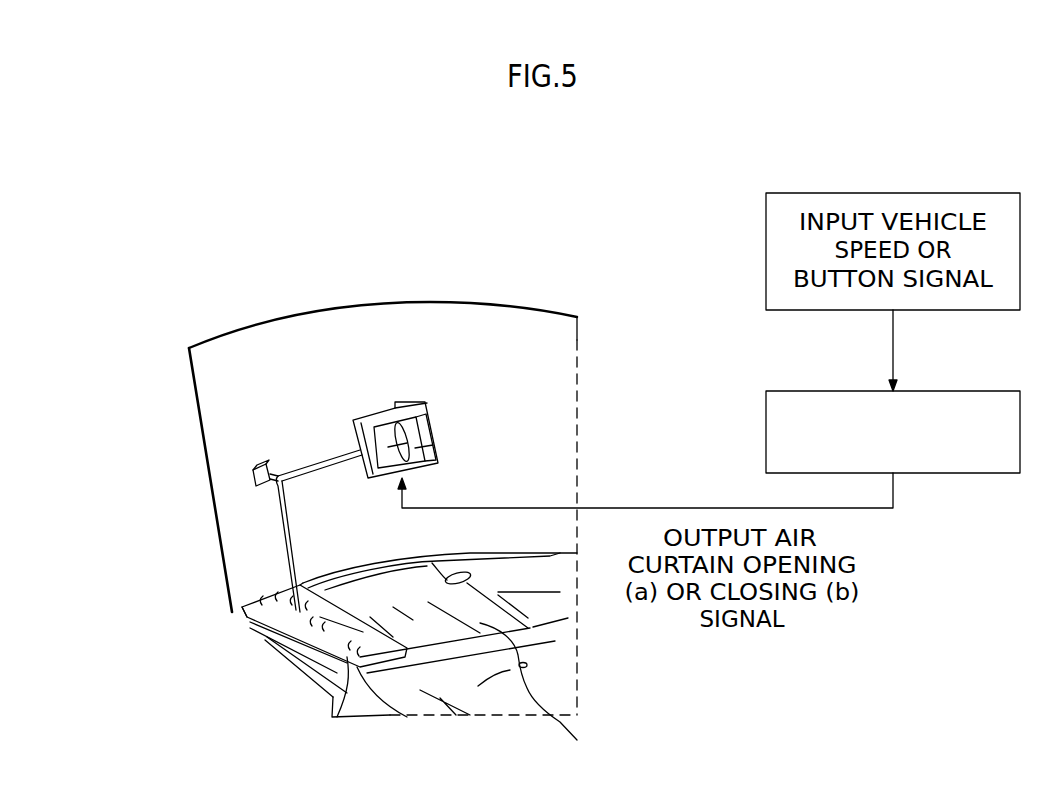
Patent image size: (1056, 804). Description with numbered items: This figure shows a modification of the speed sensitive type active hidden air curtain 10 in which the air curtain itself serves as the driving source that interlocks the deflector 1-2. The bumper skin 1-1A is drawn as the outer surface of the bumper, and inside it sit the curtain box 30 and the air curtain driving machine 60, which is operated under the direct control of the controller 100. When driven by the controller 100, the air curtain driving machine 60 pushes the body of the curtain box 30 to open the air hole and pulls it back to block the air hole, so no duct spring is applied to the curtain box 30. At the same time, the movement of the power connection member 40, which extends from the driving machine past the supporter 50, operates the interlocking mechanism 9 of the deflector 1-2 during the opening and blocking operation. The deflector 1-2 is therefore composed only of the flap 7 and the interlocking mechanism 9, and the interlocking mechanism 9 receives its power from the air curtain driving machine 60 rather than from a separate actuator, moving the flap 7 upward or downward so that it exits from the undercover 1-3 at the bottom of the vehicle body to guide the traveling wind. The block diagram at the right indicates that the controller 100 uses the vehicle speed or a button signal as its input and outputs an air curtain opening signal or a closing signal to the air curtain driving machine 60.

The speed sensitive type active hidden air curtain 10 is at (167, 366).
The bumper skin 1-1A is at (530, 350).
The curtain box 30 is at (384, 412).
The air curtain driving machine 60 is at (388, 447).
The supporter 50 is at (254, 470).
The power connection member 40 is at (284, 521).
The flap 7 is at (242, 612).
The interlocking mechanism 9 is at (305, 643).
The deflector 1-2 is at (200, 748).
The undercover 1-3 is at (459, 658).
The controller 100 is at (950, 473).